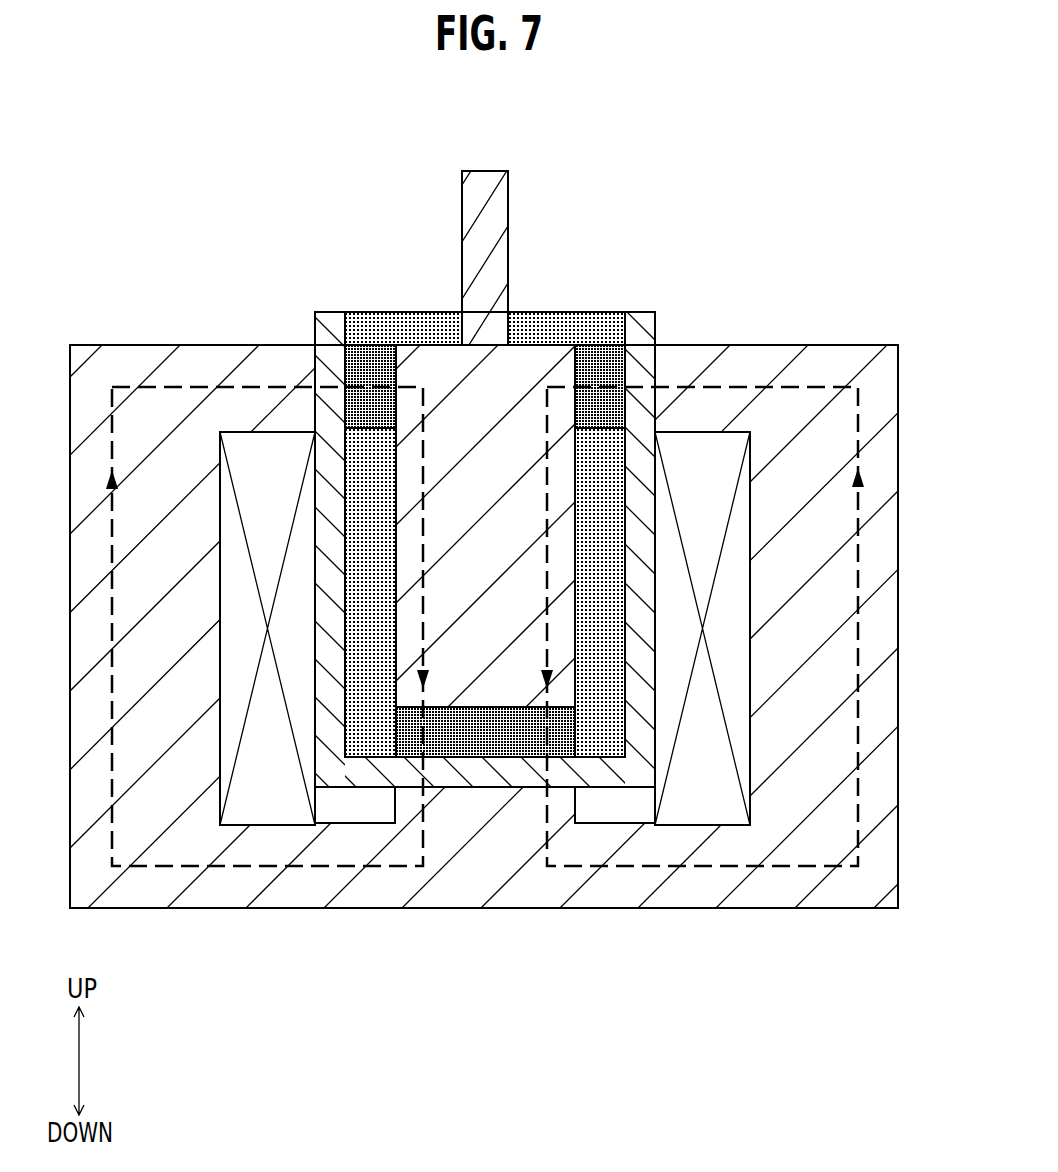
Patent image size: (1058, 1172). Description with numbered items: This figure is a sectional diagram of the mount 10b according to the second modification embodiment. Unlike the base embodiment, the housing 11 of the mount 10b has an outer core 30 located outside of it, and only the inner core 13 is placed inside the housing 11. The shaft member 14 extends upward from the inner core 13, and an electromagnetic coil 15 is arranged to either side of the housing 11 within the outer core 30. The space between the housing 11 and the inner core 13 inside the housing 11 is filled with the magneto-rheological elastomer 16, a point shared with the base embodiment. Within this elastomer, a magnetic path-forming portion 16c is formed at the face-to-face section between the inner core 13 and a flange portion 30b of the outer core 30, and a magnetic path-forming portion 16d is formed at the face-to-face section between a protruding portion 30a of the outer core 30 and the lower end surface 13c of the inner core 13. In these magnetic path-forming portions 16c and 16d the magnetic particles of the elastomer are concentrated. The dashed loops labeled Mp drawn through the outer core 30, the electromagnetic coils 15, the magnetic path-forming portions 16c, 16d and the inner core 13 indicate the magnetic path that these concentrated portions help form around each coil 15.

The mount 10b is at (749, 204).
The housing 11 is at (640, 310).
The inner core 13 is at (522, 366).
The lower end surface 13c is at (486, 720).
The shaft member 14 is at (508, 205).
The electromagnetic coil 15 is at (703, 463).
The magneto-rheological elastomer 16 is at (396, 326).
The magnetic path-forming portion 16c is at (593, 362).
The magnetic path-forming portion 16d is at (515, 757).
The outer core 30 is at (132, 344).
The protruding portion 30a is at (432, 757).
The flange portion 30b is at (280, 360).
The magnetic path Mp is at (206, 386).